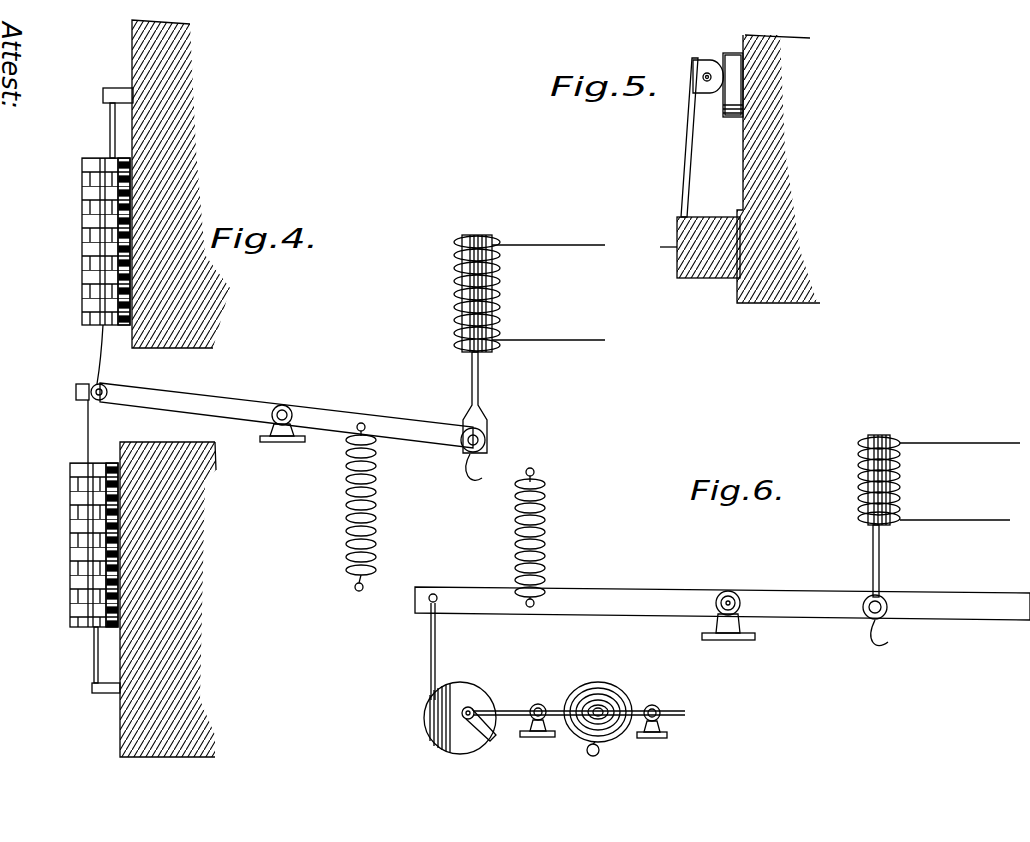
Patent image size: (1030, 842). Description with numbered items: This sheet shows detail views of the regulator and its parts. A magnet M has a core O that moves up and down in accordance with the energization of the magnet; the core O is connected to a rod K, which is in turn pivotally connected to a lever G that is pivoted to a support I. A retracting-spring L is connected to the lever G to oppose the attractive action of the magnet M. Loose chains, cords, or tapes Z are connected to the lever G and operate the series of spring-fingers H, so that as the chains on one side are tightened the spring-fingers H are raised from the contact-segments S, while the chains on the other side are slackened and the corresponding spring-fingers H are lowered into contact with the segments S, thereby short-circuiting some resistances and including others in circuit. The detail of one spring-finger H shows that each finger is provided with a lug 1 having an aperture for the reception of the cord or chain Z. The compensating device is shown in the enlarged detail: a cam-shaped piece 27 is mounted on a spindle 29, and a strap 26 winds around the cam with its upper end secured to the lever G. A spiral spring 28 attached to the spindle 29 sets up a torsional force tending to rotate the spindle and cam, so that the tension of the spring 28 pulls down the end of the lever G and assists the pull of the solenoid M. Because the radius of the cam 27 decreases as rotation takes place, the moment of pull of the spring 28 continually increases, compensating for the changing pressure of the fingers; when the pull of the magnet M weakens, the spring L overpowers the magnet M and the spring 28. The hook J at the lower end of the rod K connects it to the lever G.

In FIG. 4, the chain Z is at (115, 92).
In FIG. 5, the chain Z is at (703, 76).
In FIG. 4, the lug 1 is at (108, 158).
In FIG. 5, the lug 1 is at (707, 72).
In FIG. 6, the lug 1 is at (756, 573).
In FIG. 4, the spring-finger H is at (84, 200).
In FIG. 4, the segment S is at (128, 190).
In FIG. 5, the segment S is at (745, 85).
In FIG. 4, the lever G is at (77, 392).
In FIG. 6, the lever G is at (458, 596).
In FIG. 4, the support I is at (262, 439).
In FIG. 6, the support I is at (702, 630).
In FIG. 4, the rod K is at (510, 400).
In FIG. 5, the rod K is at (688, 135).
In FIG. 6, the rod K is at (760, 570).
In FIG. 4, the hook J is at (462, 422).
In FIG. 6, the hook J is at (868, 598).
In FIG. 4, the retracting-spring L is at (346, 497).
In FIG. 6, the retracting-spring L is at (515, 512).
In FIG. 4, the magnet M is at (455, 250).
In FIG. 6, the magnet M is at (860, 450).
In FIG. 4, the core O is at (462, 290).
In FIG. 5, the core O is at (735, 80).
In FIG. 6, the core O is at (890, 478).
In FIG. 6, the strap 26 is at (430, 642).
In FIG. 6, the cam-shaped piece 27 is at (440, 714).
In FIG. 6, the spiral spring 28 is at (575, 695).
In FIG. 6, the spindle 29 is at (495, 740).